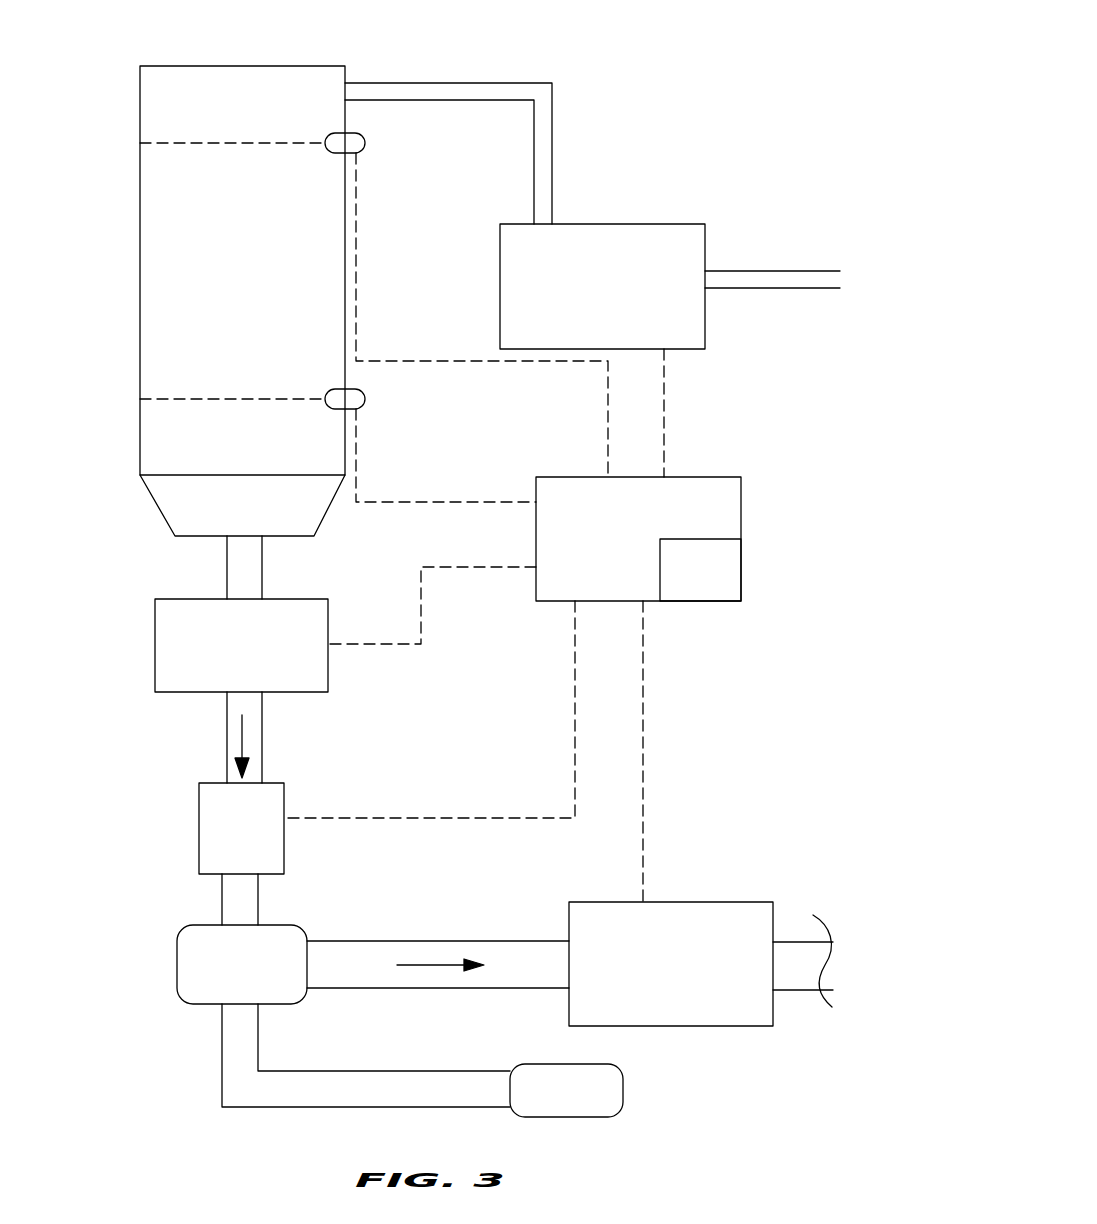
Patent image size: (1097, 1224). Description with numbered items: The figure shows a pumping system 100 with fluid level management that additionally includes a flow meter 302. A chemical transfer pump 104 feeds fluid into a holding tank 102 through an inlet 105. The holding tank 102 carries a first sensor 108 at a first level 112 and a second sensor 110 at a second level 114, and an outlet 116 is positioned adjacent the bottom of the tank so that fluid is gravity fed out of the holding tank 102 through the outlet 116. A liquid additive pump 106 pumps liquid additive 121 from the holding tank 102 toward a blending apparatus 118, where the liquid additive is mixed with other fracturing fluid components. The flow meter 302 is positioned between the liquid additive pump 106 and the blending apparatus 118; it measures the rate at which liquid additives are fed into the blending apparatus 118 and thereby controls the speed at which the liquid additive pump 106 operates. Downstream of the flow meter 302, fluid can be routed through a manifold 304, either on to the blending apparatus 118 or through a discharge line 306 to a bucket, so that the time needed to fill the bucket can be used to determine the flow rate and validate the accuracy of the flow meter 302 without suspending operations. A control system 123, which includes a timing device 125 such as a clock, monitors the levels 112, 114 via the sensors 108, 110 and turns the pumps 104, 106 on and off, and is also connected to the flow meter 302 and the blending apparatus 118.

The pumping system 100 is at (748, 126).
The holding tank 102 is at (242, 270).
The chemical transfer pump 104 is at (670, 286).
The inlet 105 is at (345, 84).
The liquid additive pump 106 is at (241, 645).
The first sensor 108 is at (365, 399).
The second sensor 110 is at (365, 143).
The first level 112 is at (140, 399).
The second level 114 is at (140, 143).
The outlet 116 is at (242, 505).
The blending apparatus 118 is at (701, 964).
The liquid additive 121 is at (238, 737).
The control system 123 is at (741, 495).
The timing device 125 is at (741, 565).
The flow meter 302 is at (241, 828).
The manifold 304 is at (242, 964).
The discharge line 306 is at (566, 1090).